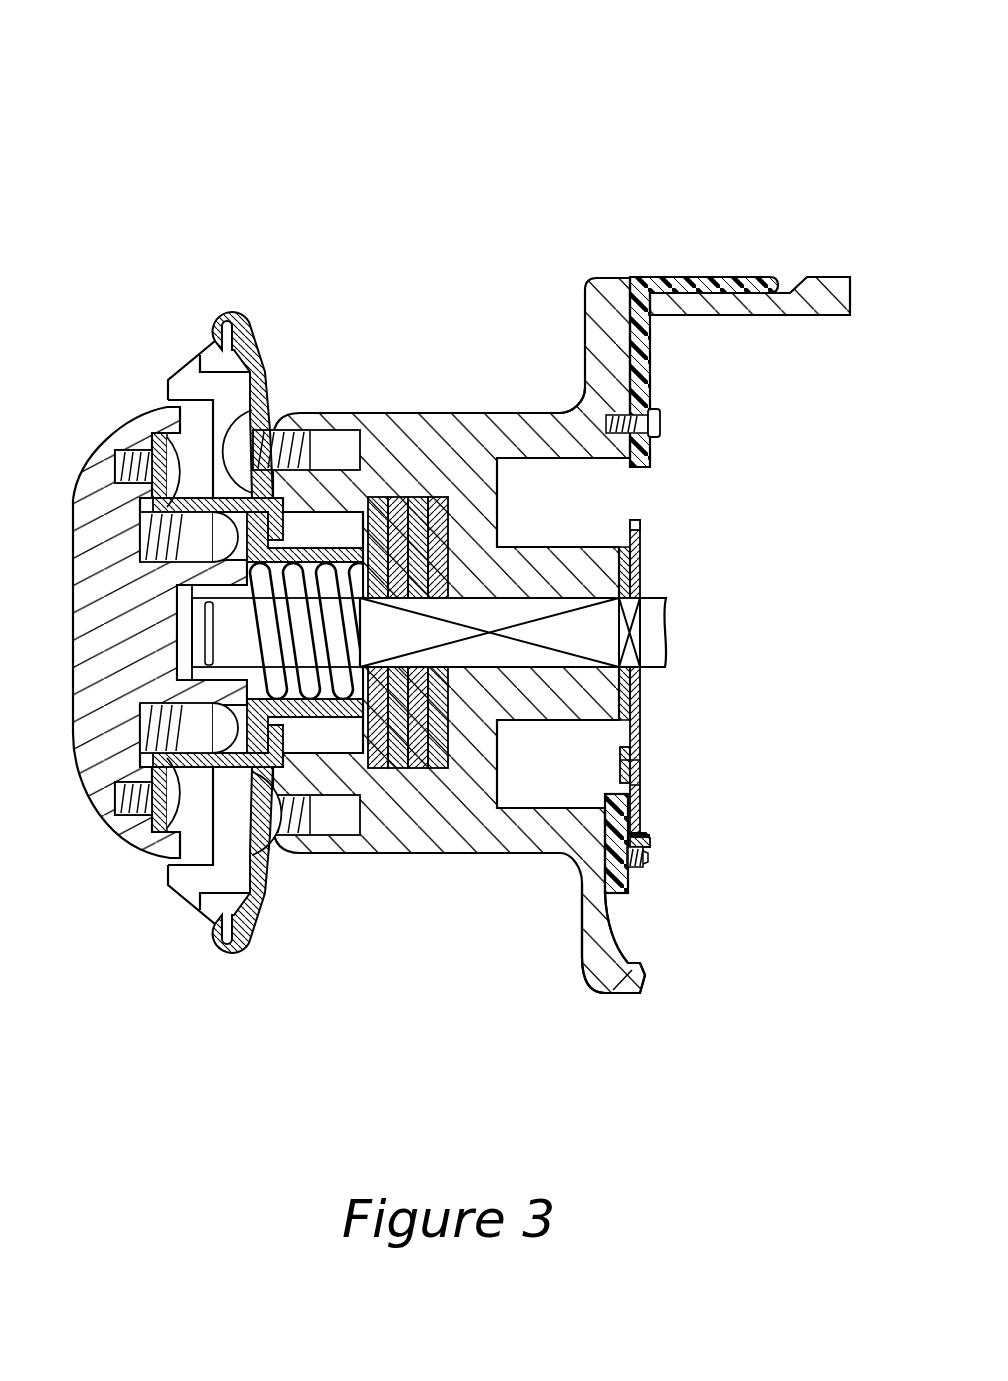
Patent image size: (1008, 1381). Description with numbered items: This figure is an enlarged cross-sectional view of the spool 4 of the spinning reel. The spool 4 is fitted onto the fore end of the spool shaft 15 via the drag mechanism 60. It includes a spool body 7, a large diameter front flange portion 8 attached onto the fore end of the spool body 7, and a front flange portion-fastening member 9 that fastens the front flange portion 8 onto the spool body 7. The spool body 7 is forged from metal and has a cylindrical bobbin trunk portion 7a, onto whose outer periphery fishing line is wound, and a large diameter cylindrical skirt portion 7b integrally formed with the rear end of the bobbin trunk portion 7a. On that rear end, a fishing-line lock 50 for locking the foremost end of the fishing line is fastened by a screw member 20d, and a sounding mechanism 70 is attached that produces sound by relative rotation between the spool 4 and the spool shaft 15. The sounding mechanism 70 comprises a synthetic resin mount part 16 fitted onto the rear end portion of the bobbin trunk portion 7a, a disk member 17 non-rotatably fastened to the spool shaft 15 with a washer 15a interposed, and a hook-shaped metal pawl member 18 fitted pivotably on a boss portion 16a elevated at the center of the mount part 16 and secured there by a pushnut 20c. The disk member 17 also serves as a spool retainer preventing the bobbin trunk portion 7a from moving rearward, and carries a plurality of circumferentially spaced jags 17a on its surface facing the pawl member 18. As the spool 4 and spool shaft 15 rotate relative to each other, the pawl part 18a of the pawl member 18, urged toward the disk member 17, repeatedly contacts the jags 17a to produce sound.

The spool 4 is at (471, 548).
The spool body 7 is at (461, 534).
The bobbin trunk portion 7a is at (488, 411).
The skirt portion 7b is at (826, 277).
The front flange portion 8 is at (218, 318).
The front flange portion-fastening member 9 is at (177, 377).
The spool shaft 15 is at (657, 620).
The washer 15a is at (643, 577).
The mount part 16 is at (632, 970).
The boss portion 16a is at (653, 840).
The disk member 17 is at (640, 703).
The jags 17a is at (632, 760).
The pawl member 18 is at (641, 790).
The pawl part 18a is at (632, 775).
The pushnut 20c is at (648, 862).
The screw member 20d is at (660, 417).
The fishing-line lock 50 is at (684, 280).
The drag mechanism 60 is at (393, 763).
The sounding mechanism 70 is at (662, 822).